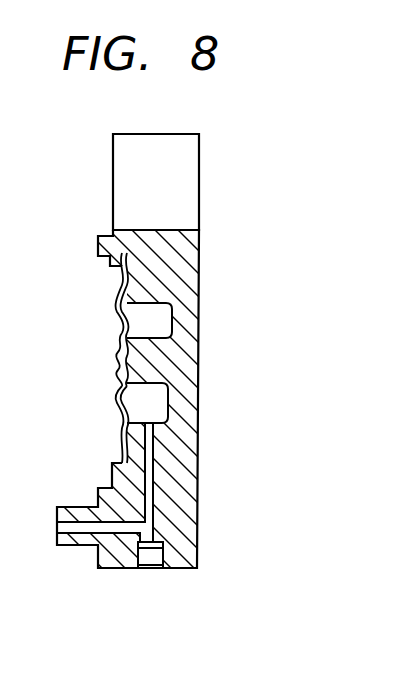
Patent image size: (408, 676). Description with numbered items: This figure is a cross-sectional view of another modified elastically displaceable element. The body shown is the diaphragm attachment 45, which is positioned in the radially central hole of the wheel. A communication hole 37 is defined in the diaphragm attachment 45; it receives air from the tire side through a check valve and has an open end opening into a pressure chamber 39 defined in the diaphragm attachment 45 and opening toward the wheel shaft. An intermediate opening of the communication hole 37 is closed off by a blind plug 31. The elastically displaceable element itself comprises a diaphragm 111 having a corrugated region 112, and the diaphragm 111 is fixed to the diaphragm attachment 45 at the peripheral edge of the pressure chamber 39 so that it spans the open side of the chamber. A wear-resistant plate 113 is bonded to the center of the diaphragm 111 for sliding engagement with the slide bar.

The diaphragm attachment 45 is at (199, 300).
The pressure chamber 39 is at (160, 409).
The communication hole 37 is at (148, 492).
The blind plug 31 is at (144, 556).
The diaphragm 111 is at (121, 312).
The wear-resistant plate 113 is at (116, 353).
The corrugated region 112 is at (118, 396).